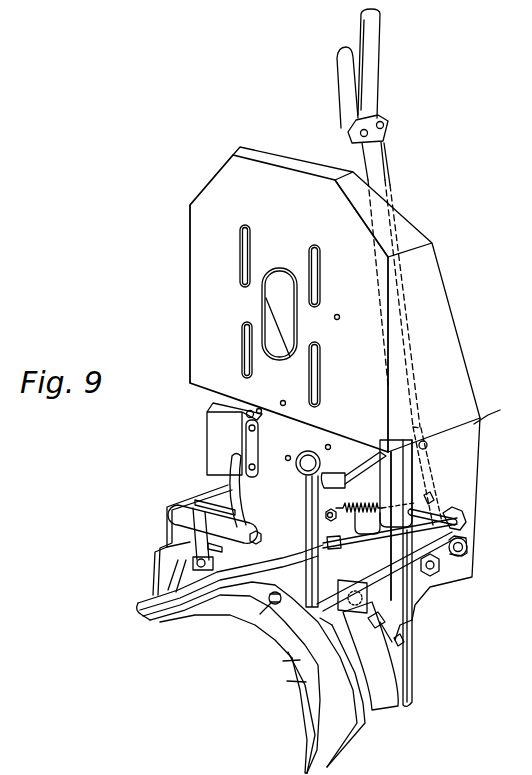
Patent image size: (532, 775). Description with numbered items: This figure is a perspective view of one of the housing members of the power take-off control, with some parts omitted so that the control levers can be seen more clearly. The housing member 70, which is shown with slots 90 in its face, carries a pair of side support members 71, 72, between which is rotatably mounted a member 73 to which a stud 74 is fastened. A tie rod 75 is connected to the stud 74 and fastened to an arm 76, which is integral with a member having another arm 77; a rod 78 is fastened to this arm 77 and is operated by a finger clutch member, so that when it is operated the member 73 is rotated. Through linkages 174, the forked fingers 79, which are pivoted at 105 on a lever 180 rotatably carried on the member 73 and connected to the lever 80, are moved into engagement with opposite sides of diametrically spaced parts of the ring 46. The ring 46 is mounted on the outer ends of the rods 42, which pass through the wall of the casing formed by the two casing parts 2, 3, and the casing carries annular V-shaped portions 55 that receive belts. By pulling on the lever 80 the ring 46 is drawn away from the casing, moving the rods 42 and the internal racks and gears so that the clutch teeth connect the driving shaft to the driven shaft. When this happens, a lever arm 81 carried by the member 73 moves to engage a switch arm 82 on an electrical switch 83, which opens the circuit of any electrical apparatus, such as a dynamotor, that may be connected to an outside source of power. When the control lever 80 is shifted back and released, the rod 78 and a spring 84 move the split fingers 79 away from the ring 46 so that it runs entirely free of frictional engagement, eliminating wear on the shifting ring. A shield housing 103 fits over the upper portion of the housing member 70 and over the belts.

The casing part 2 is at (290, 666).
The casing part 3 is at (306, 708).
The rod 42 is at (271, 614).
The ring 46 is at (338, 741).
The annular V shaped portion 55 is at (212, 620).
The housing member 70 is at (460, 371).
The side support member 71 is at (406, 622).
The side support member 72 is at (189, 497).
The rotatably mounted member 73 is at (277, 545).
The stud 74 is at (428, 587).
The tie rod 75 is at (347, 544).
The arm 76 is at (447, 502).
The arm 77 is at (465, 526).
The rod 78 is at (386, 150).
The forked fingers 79 is at (168, 584).
The lever 80 is at (376, 184).
The lever arm 81 is at (244, 502).
The switch arm 82 is at (247, 452).
The electrical switch 83 is at (219, 453).
The spring 84 is at (383, 573).
The slot 90 is at (310, 258).
The housing 103 is at (502, 410).
The pivot 105 is at (280, 648).
The linkages 174 is at (404, 640).
The lever 180 is at (230, 535).